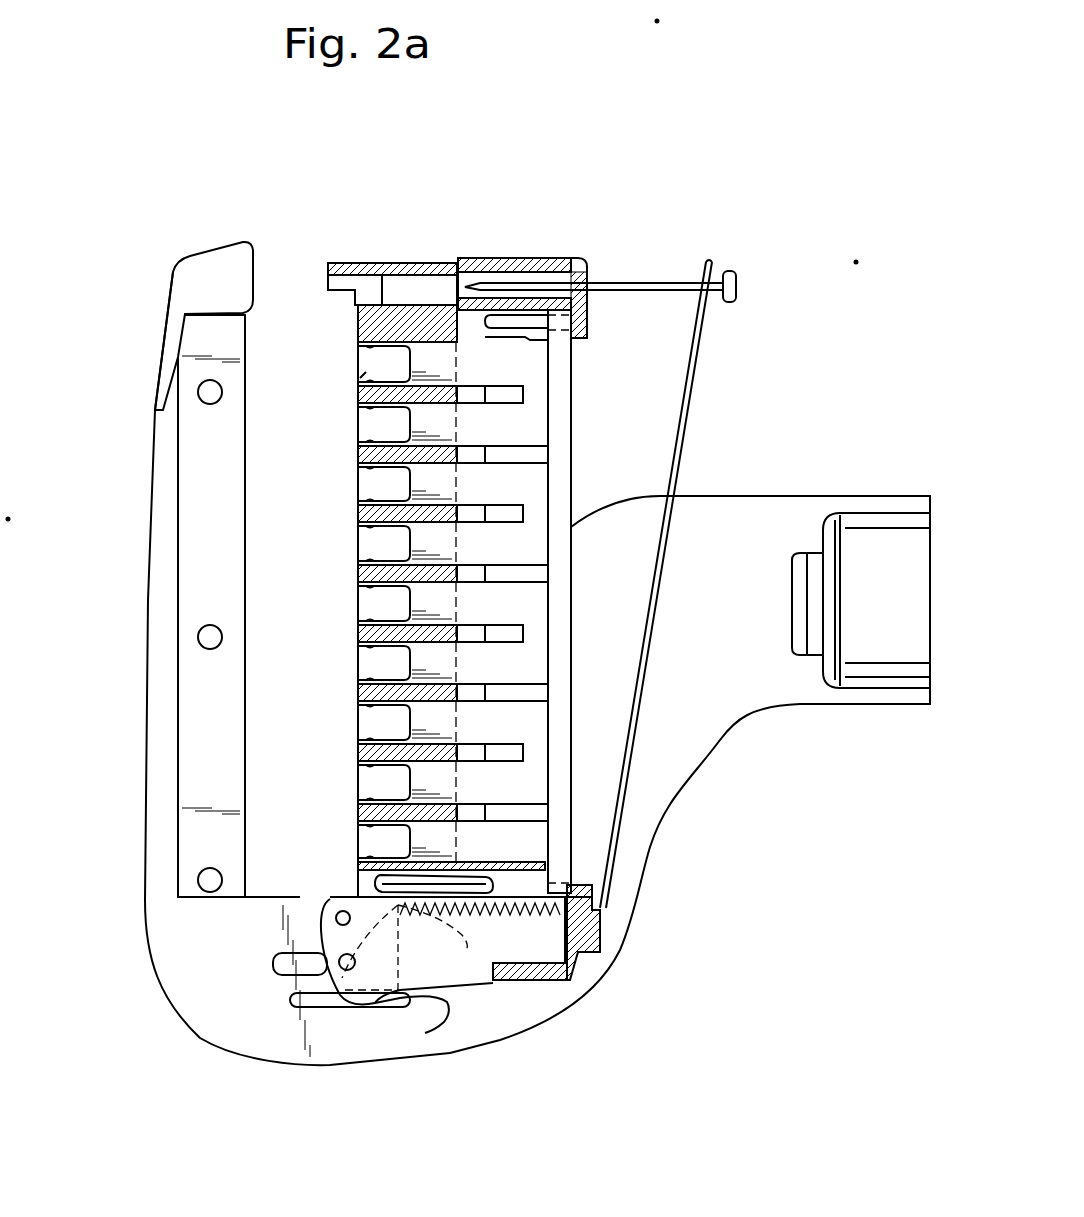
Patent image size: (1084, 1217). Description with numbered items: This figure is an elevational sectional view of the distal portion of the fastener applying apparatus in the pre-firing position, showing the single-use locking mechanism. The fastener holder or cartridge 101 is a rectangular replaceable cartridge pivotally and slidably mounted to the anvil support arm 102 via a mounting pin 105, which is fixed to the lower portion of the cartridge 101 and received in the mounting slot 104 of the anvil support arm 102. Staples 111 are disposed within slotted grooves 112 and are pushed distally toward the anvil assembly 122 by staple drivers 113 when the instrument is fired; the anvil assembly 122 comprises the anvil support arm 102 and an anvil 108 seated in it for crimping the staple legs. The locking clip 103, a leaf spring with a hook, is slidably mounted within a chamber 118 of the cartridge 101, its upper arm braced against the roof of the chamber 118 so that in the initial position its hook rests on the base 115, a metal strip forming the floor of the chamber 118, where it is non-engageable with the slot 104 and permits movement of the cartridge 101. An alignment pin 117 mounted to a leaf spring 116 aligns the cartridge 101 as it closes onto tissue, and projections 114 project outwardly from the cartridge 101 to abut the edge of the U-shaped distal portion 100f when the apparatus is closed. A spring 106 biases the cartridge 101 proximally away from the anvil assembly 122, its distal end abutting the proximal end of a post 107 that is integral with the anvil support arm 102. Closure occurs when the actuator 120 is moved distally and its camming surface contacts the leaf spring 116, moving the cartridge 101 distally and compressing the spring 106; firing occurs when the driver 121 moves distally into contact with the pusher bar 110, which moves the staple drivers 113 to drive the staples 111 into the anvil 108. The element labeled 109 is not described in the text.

The U-shaped distal portion 100f is at (665, 810).
The cartridge 101 is at (534, 237).
The anvil support arm 102 is at (150, 665).
The locking clip 103 is at (480, 896).
The slot 104 is at (280, 997).
The mounting pin 105 is at (348, 971).
The spring 106 is at (470, 932).
The post 107 is at (357, 1005).
The anvil 108 is at (247, 492).
The support plate 109 is at (314, 902).
The pusher bar 110 is at (572, 470).
The staples 111 is at (375, 350).
The slotted grooves 112 is at (364, 373).
The staple drivers 113 is at (512, 425).
The projections 114 is at (325, 903).
The base 115 is at (338, 908).
The leaf spring 116 is at (657, 590).
The alignment pin 117 is at (650, 283).
The chamber 118 is at (372, 878).
The actuator 120 is at (856, 525).
The driver 121 is at (800, 548).
The anvil assembly 122 is at (145, 458).